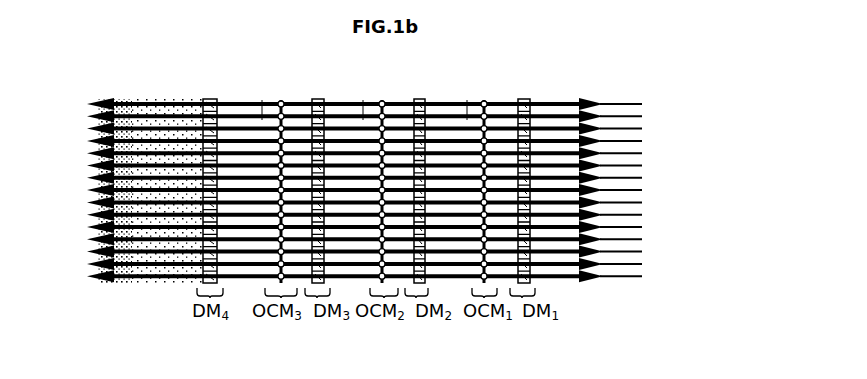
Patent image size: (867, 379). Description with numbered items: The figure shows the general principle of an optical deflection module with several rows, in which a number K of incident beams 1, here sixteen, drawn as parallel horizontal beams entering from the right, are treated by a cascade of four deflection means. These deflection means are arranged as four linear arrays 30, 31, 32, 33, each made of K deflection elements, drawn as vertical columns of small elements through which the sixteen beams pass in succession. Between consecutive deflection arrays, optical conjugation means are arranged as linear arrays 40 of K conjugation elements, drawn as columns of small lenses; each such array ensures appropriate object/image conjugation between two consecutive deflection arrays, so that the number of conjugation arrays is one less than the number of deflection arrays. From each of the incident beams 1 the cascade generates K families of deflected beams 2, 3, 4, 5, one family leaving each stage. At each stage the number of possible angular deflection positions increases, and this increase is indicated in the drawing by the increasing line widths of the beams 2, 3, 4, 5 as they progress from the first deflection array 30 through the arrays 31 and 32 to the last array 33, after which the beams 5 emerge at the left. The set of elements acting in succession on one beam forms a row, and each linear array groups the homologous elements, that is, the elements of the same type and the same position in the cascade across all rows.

The incident beams 1 is at (634, 278).
The deflected beams after the first deflection means 2 is at (515, 198).
The deflected beams after the second deflection means 3 is at (403, 280).
The deflected beams after the third deflection means 4 is at (302, 280).
The deflected beams after the fourth deflection means 5 is at (168, 155).
The first linear array of deflection elements 30 is at (528, 101).
The second linear array of deflection elements 31 is at (425, 101).
The third linear array of deflection elements 32 is at (318, 100).
The fourth linear array of deflection elements 33 is at (215, 100).
The linear array of optical conjugation elements 40 is at (265, 118).